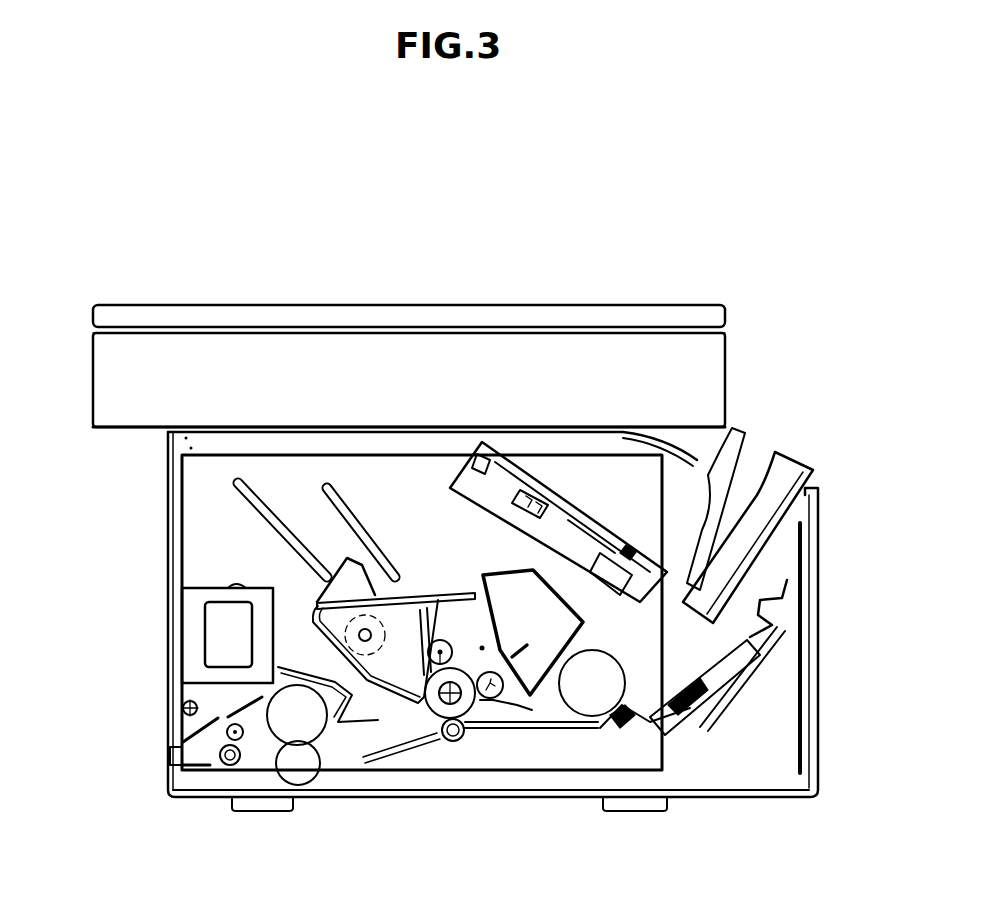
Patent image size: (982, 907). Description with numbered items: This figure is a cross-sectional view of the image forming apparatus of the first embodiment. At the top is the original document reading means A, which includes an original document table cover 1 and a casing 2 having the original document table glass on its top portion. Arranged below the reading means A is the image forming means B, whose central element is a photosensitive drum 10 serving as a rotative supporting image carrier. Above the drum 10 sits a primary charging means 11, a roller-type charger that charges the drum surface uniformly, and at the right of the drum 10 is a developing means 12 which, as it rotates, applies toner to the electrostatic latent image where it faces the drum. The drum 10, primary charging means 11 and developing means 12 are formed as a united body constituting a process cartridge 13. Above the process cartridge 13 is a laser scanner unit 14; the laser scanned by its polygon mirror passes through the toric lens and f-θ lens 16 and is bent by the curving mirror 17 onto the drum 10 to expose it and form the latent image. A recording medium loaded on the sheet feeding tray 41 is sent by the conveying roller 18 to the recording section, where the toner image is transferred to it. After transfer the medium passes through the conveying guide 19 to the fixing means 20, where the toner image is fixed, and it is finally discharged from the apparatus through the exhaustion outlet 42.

The original document table cover 1 is at (557, 315).
The original document reading means A is at (180, 368).
The image forming means B is at (208, 548).
The casing 2 is at (180, 765).
The photosensitive drum 10 is at (465, 720).
The primary charging means 11 is at (439, 640).
The developing means 12 is at (490, 700).
The process cartridge 13 is at (415, 598).
The laser scanner unit 14 is at (577, 513).
The f-θ lens 16 is at (550, 497).
The curving mirror 17 is at (488, 455).
The conveying roller 18 is at (602, 682).
The conveying guide 19 is at (385, 730).
The fixing means 20 is at (298, 738).
The sheet feeding tray 41 is at (795, 458).
The exhaustion outlet 42 is at (172, 750).